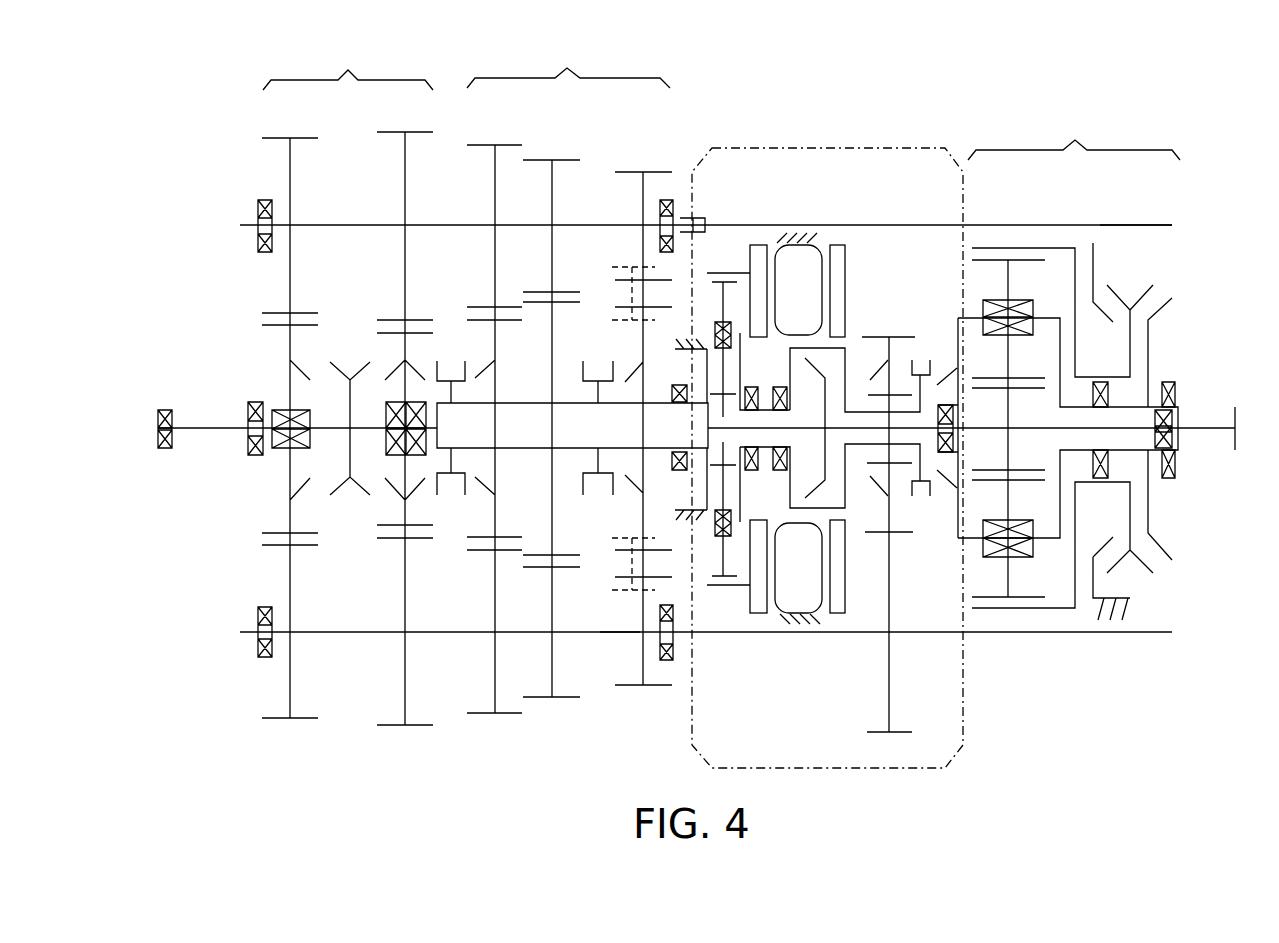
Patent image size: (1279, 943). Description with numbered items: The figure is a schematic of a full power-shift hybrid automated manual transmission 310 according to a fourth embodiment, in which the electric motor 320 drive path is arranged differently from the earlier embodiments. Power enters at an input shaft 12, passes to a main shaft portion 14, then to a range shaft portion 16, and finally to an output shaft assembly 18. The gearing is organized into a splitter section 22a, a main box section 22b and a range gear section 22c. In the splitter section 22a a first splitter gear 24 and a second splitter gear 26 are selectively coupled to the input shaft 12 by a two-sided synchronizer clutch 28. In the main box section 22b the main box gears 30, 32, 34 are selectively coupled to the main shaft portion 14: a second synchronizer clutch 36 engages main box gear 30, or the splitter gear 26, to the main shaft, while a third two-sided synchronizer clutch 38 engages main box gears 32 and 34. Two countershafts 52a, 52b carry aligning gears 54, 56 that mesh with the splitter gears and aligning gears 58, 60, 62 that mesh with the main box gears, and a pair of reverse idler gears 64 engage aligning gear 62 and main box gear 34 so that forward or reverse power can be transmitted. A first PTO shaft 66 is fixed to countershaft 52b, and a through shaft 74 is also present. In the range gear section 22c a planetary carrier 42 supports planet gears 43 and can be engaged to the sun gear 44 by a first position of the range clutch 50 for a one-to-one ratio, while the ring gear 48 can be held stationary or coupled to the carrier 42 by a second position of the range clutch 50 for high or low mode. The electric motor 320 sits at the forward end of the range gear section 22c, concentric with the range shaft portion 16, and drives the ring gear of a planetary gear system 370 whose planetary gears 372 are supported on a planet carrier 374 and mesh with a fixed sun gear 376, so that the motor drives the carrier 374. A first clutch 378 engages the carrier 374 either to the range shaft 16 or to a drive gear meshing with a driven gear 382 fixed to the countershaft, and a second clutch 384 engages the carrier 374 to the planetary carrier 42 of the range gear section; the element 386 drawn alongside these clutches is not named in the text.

The input shaft 12 is at (215, 430).
The main shaft portion 14 is at (505, 403).
The range shaft portion 16 is at (1066, 447).
The output shaft assembly 18 is at (1200, 428).
The splitter section 22a is at (348, 67).
The main box section 22b is at (568, 65).
The range gear section 22c is at (1074, 137).
The first splitter gear 24 is at (302, 325).
The second splitter gear 26 is at (415, 325).
The two-sided synchronizer clutch 28 is at (350, 518).
The main box gear 30 is at (498, 307).
The main box gear 32 is at (555, 292).
The main box gear 34 is at (665, 307).
The second synchronizer clutch 36 is at (448, 528).
The third two-sided synchronizer clutch 38 is at (598, 506).
The planetary carrier 42 is at (965, 540).
The planet gears 43 is at (985, 260).
The sun gear 44 is at (1010, 392).
The ring gear 48 is at (1053, 248).
The range clutch 50 is at (1146, 276).
The countershaft 52a is at (327, 633).
The countershaft 52b is at (373, 225).
The aligning gear 54 is at (298, 138).
The aligning gear 56 is at (392, 132).
The aligning gear 58 is at (502, 145).
The aligning gear 60 is at (568, 160).
The aligning gear 62 is at (630, 172).
The reverse idler gears 64 is at (630, 320).
The first PTO shaft 66 is at (1148, 225).
The through shaft 74 is at (620, 633).
The hybrid transmission 310 is at (840, 112).
The electric motor 320 is at (802, 228).
The planetary gear system 370 is at (735, 272).
The planetary gears 372 is at (720, 588).
The planet carrier 374 is at (827, 347).
The fixed sun gear 376 is at (713, 400).
The first clutch 378 is at (853, 522).
The driven gear 382 is at (905, 733).
The second clutch 384 is at (923, 342).
The clutch 386 is at (878, 335).